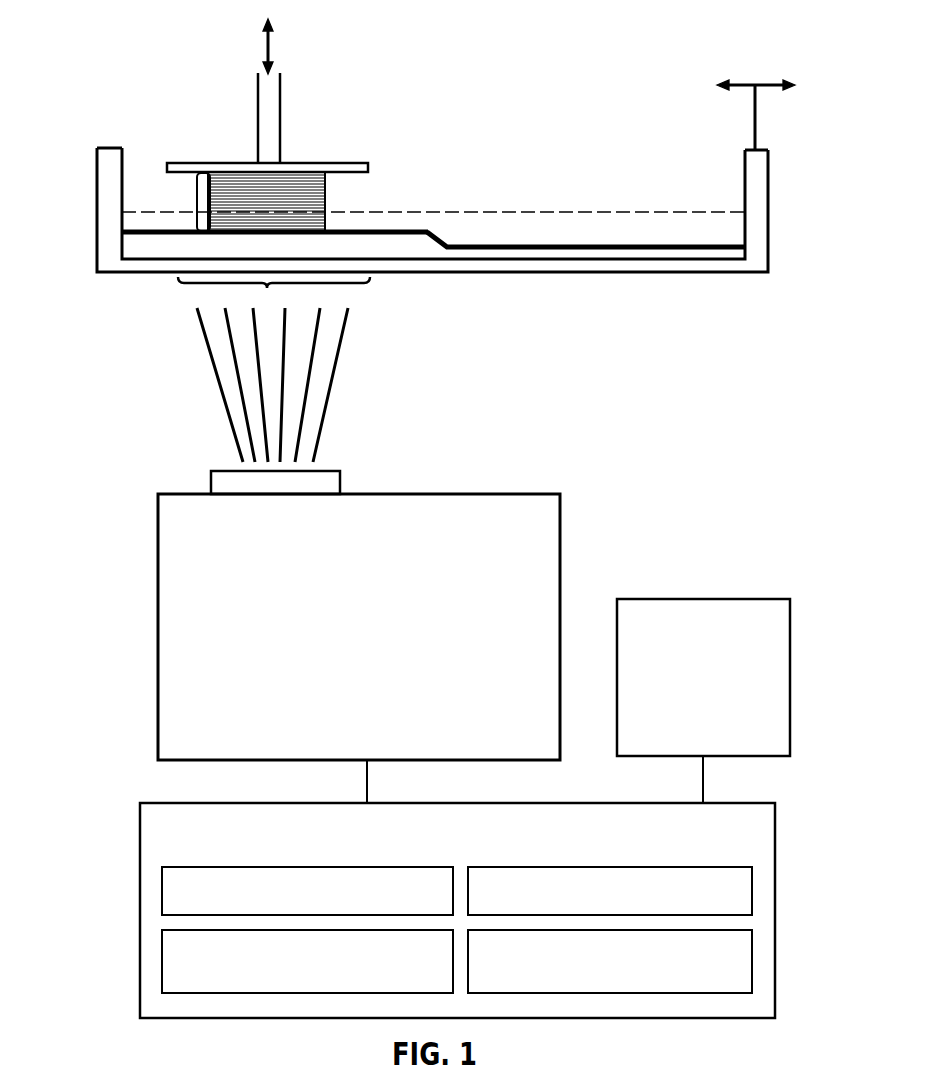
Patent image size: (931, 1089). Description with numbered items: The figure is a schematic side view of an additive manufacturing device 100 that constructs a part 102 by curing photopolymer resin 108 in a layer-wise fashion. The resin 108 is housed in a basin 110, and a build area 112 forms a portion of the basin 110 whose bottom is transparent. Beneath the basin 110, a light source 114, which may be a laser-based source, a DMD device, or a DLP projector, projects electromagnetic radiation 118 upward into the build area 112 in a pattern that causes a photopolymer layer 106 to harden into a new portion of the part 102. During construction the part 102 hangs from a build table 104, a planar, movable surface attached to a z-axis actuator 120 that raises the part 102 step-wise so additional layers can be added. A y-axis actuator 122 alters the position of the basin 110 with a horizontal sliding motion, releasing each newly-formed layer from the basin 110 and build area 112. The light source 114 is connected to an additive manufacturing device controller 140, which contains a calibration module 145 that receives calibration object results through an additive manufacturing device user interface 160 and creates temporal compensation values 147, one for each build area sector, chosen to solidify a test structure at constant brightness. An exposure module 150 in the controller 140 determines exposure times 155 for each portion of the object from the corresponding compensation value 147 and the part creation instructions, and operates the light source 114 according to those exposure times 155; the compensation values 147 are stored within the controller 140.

The additive manufacturing device 100 is at (698, 478).
The part 102 is at (197, 203).
The build table 104 is at (339, 163).
The photopolymer layer 106 is at (325, 230).
The photopolymer resin 108 is at (592, 232).
The basin 110 is at (752, 195).
The build area 112 is at (267, 288).
The light source 114 is at (477, 548).
The electromagnetic radiation 118 is at (338, 395).
The z-axis actuator 120 is at (270, 57).
The y-axis actuator 122 is at (756, 130).
The additive manufacturing device controller 140 is at (412, 910).
The calibration module 145 is at (307, 891).
The temporal compensation values 147 is at (307, 961).
The exposure module 150 is at (610, 891).
The exposure times 155 is at (610, 961).
The additive manufacturing device user interface 160 is at (629, 744).